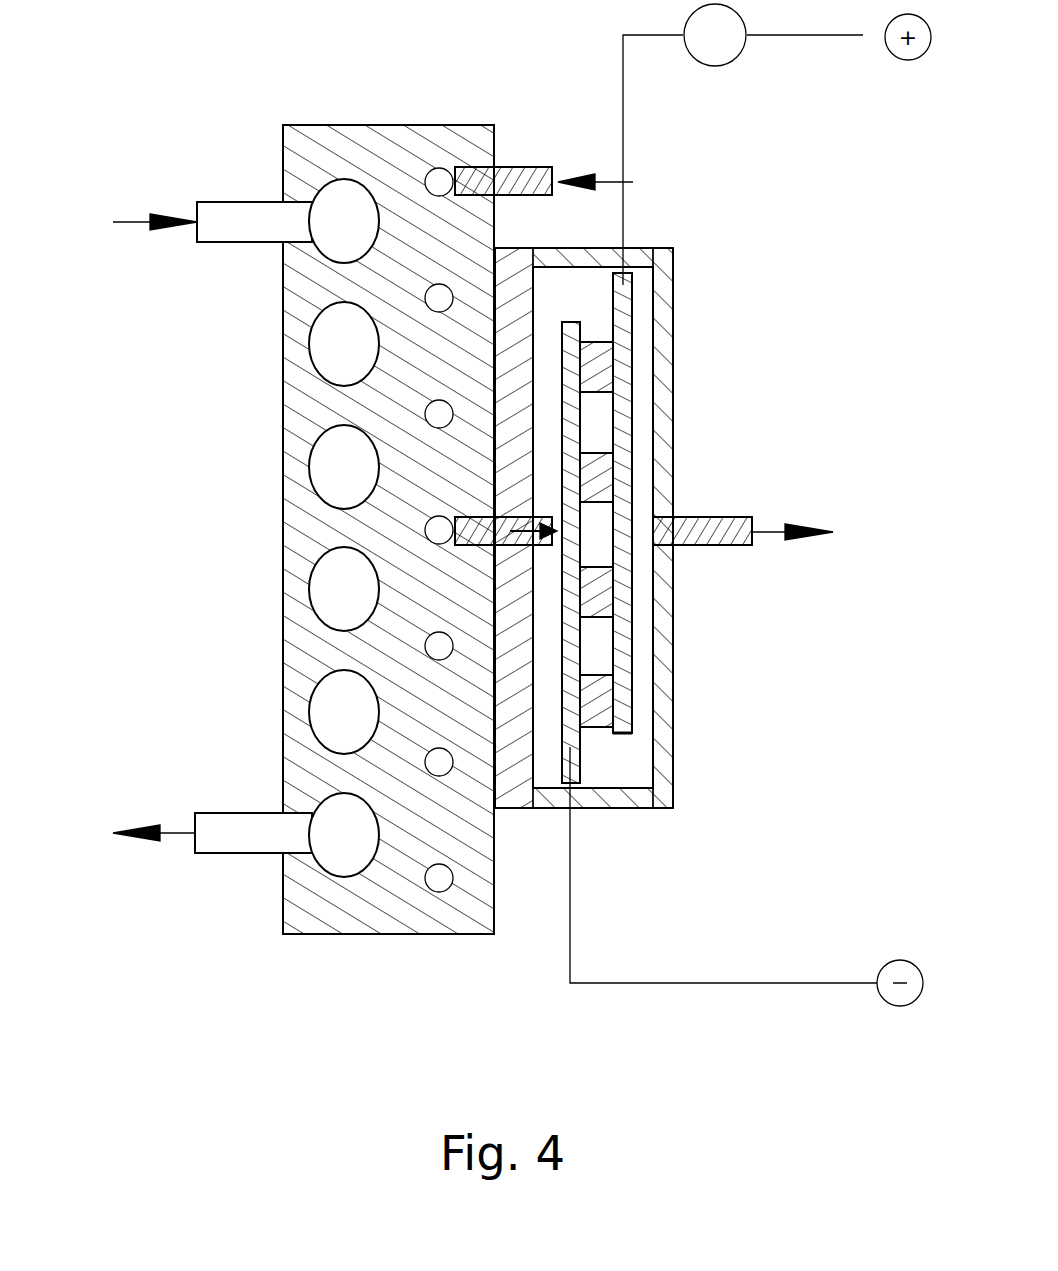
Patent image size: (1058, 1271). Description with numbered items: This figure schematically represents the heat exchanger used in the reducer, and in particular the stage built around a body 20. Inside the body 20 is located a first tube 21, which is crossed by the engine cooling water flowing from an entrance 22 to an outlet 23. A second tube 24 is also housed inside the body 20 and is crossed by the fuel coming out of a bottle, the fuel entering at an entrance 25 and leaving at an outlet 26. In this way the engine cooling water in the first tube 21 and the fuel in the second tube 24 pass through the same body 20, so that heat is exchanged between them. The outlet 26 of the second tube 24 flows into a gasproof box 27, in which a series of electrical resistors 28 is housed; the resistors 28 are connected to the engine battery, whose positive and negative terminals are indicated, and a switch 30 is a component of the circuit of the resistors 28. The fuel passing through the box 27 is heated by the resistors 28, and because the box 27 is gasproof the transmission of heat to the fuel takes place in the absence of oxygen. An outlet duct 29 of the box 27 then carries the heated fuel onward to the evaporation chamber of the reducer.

The body 20 is at (343, 902).
The first tube 21 is at (350, 464).
The entrance 22 is at (257, 222).
The outlet 23 is at (263, 830).
The second tube 24 is at (440, 645).
The entrance 25 is at (520, 167).
The outlet 26 is at (515, 547).
The gasproof box 27 is at (665, 330).
The electrical resistors 28 is at (590, 572).
The outlet duct 29 is at (730, 517).
The switch 30 is at (715, 35).